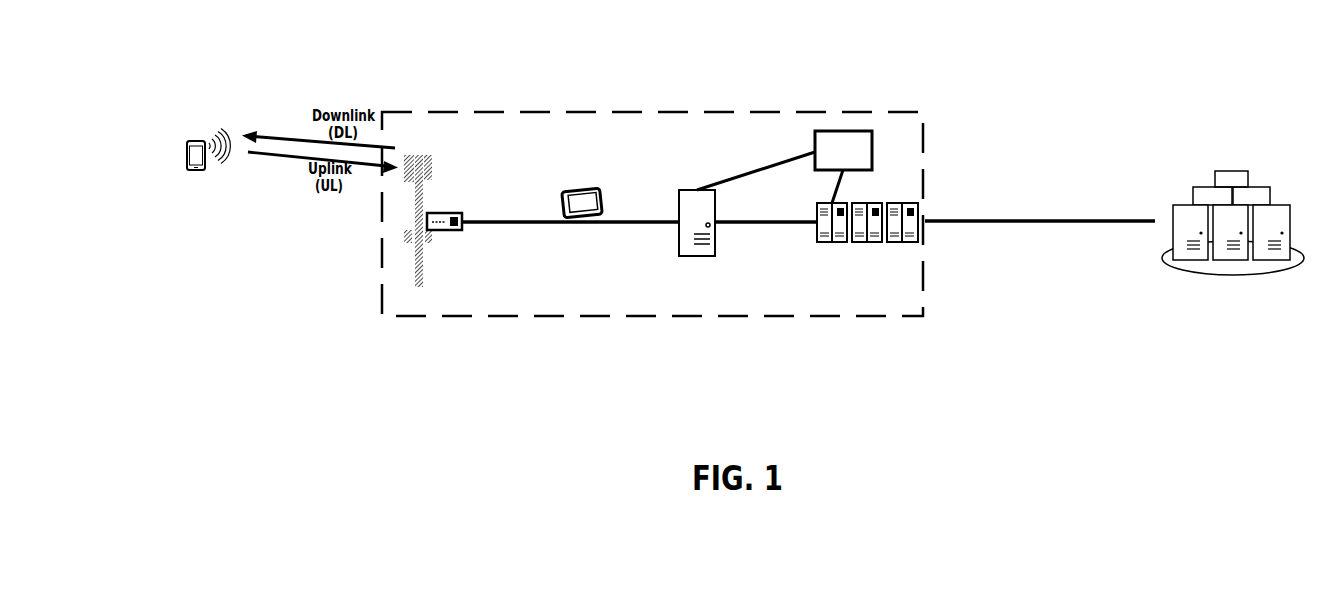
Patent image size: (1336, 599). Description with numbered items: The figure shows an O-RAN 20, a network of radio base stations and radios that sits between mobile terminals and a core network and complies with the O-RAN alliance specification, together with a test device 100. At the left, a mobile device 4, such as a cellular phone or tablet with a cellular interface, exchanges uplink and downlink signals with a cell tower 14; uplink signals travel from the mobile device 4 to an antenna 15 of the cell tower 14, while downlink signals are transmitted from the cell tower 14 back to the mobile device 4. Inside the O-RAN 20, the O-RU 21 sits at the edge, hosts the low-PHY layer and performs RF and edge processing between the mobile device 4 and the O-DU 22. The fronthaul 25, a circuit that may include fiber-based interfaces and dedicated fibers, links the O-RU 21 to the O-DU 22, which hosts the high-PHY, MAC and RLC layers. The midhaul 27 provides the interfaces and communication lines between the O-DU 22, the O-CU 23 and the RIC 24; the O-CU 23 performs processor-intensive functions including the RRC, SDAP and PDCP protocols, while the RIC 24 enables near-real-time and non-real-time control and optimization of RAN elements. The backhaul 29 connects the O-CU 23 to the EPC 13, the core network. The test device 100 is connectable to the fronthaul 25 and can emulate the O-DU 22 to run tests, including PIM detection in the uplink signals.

The mobile device 4 is at (183, 141).
The EPC 13 is at (1225, 171).
The cell tower 14 is at (414, 280).
The antenna 15 is at (406, 150).
The O-RAN 20 is at (602, 112).
The O-RU 21 is at (452, 213).
The O-DU 22 is at (679, 208).
The O-CU 23 is at (885, 203).
The RIC 24 is at (841, 131).
The fronthaul 25 is at (570, 261).
The midhaul 27 is at (770, 203).
The backhaul 29 is at (1040, 247).
The test device 100 is at (563, 190).